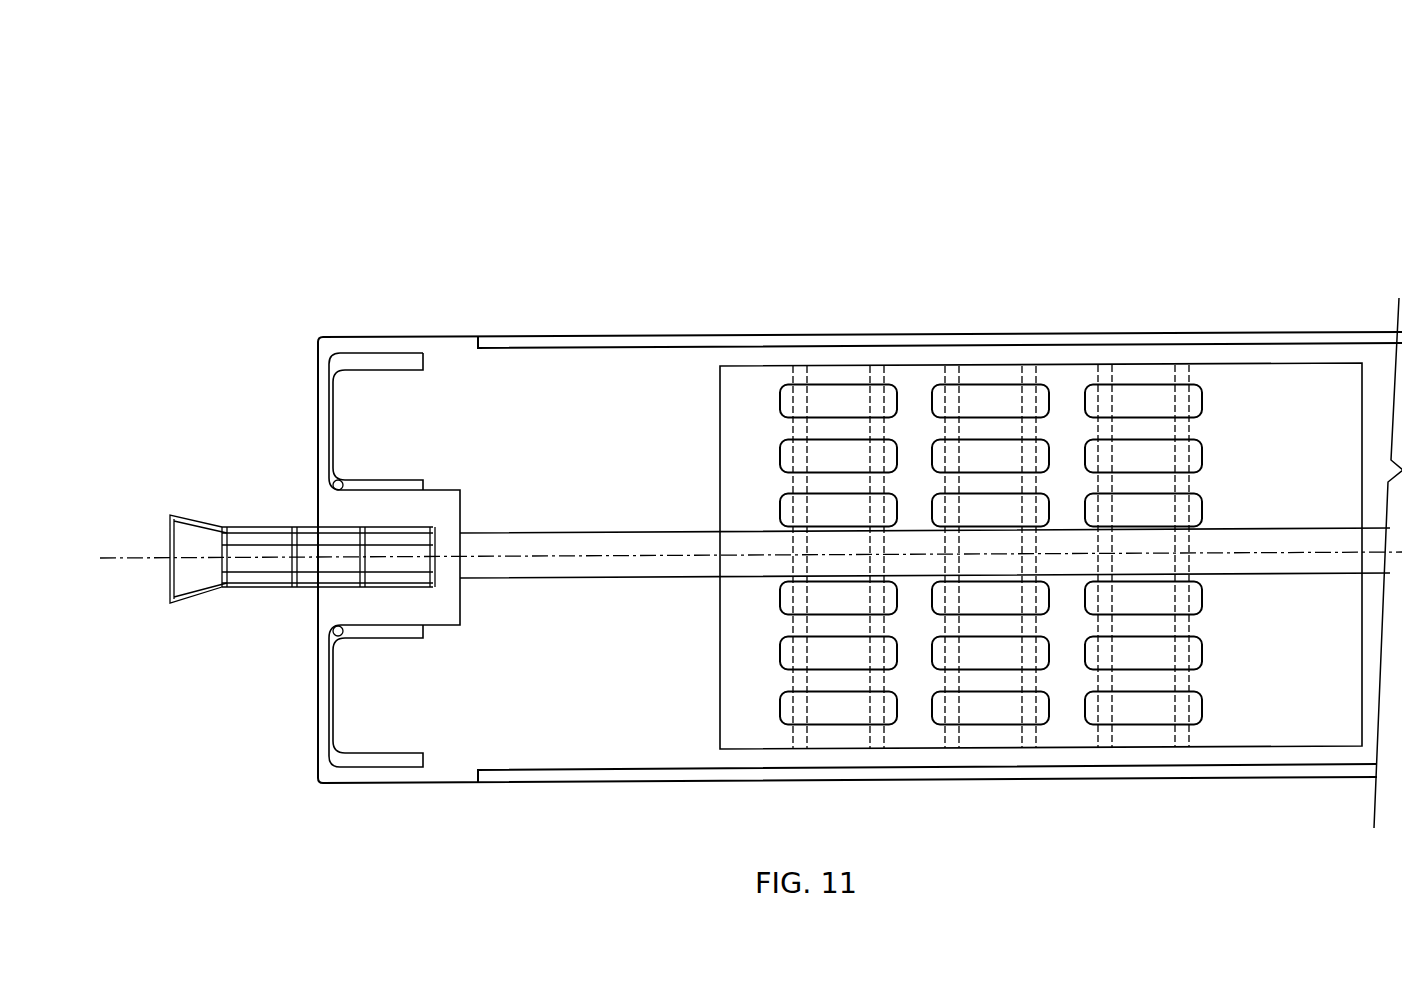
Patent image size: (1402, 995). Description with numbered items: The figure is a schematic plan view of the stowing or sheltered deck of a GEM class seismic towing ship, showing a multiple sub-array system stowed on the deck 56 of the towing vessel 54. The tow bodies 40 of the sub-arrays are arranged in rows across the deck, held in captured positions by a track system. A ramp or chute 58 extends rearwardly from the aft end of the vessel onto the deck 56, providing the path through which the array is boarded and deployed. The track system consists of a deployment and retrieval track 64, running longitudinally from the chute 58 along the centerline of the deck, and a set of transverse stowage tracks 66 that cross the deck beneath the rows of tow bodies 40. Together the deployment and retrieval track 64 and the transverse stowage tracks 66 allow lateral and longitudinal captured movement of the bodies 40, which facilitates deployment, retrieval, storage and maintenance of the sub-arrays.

The tow bodies 40 is at (825, 381).
The towing vessel 54 is at (1308, 341).
The shelter deck 56 is at (500, 403).
The chute 58 is at (267, 590).
The deployment and retrieval track 64 is at (597, 578).
The transverse stowage tracks 66 is at (800, 750).